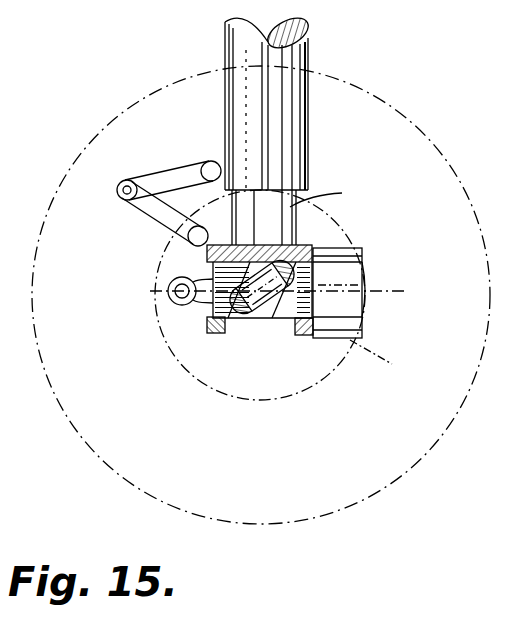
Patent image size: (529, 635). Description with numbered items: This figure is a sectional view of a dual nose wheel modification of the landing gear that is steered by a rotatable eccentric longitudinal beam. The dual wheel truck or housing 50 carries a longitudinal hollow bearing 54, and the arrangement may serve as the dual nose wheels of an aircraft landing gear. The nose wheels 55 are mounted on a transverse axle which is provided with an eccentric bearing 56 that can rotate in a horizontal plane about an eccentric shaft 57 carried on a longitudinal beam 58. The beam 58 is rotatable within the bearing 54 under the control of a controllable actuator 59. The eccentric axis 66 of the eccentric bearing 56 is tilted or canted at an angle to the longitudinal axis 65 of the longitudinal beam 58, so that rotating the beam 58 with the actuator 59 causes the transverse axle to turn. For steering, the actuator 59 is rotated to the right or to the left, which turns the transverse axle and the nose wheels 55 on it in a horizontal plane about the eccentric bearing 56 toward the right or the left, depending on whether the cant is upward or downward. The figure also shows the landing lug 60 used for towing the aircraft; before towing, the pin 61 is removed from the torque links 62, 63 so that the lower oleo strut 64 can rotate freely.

The dual wheel truck or housing 50 is at (300, 247).
The longitudinal hollow bearing 54 is at (178, 262).
The nose wheels 55 is at (392, 153).
The eccentric bearing 56 is at (240, 324).
The eccentric shaft 57 is at (264, 324).
The longitudinal beam 58 is at (302, 334).
The controllable actuator 59 is at (350, 305).
The landing lug 60 is at (170, 316).
The pin 61 is at (121, 200).
The torque link 62 is at (170, 177).
The torque link 63 is at (150, 226).
The lower oleo strut 64 is at (328, 194).
The longitudinal axis 65 is at (398, 293).
The eccentric axis 66 is at (382, 357).